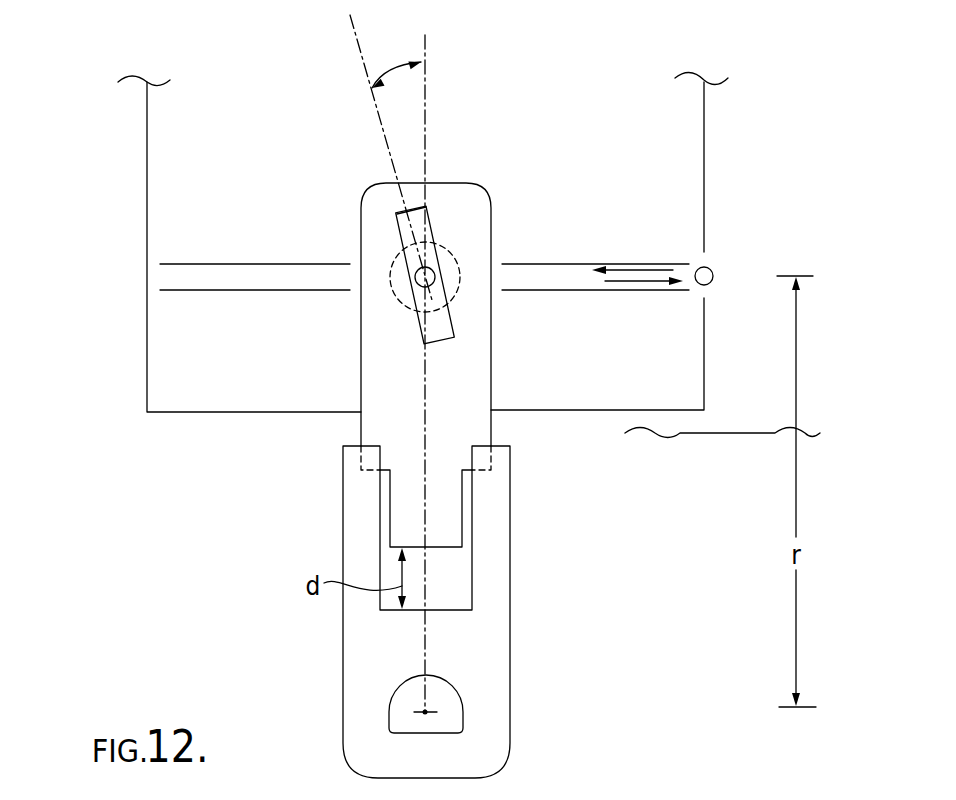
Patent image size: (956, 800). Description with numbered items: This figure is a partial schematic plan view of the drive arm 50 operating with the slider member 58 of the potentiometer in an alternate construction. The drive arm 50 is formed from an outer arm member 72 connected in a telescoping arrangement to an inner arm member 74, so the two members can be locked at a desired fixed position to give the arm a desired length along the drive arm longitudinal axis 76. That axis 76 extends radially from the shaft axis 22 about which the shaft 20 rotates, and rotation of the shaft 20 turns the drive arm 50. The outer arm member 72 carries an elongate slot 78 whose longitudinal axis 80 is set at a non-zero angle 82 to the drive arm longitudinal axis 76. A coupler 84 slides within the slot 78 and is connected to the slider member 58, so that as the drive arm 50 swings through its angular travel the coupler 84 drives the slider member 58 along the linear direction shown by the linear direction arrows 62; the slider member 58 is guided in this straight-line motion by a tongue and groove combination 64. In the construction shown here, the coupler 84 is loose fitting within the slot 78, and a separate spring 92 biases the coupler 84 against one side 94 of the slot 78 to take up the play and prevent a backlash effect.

The shaft 20 is at (450, 703).
The shaft axis 22 is at (424, 712).
The drive arm 50 is at (389, 612).
The slider member 58 is at (649, 377).
The linear direction arrows 62 is at (639, 278).
The tongue and groove combination 64 is at (713, 422).
The outer arm member 72 is at (390, 405).
The inner arm member 74 is at (498, 613).
The drive arm longitudinal axis 76 is at (427, 75).
The slot 78 is at (397, 228).
The slot longitudinal axis 80 is at (355, 47).
The non-zero angle 82 is at (392, 73).
The coupler 84 is at (425, 277).
The spring 92 is at (375, 319).
The side of the slot 94 is at (435, 317).